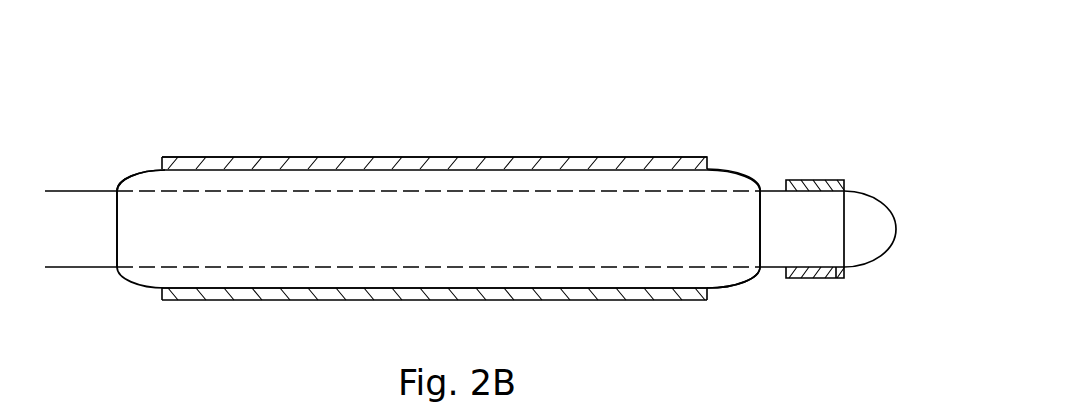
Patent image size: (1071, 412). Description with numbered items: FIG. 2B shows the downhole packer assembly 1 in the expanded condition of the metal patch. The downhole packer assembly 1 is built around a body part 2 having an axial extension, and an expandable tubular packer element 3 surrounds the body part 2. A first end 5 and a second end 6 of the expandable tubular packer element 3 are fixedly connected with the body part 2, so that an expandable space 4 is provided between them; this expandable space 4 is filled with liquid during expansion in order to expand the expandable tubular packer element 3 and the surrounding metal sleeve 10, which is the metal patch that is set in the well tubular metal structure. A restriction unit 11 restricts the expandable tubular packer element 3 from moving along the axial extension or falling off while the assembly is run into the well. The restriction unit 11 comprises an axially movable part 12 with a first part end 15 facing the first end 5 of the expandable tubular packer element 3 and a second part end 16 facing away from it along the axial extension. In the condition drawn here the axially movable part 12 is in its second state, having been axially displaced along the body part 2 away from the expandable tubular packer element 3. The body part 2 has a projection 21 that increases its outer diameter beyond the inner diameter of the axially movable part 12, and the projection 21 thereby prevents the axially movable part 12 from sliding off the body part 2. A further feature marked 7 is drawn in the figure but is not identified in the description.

The downhole packer assembly 1 is at (116, 100).
The body part 2 is at (63, 205).
The expandable tubular packer element 3 is at (522, 210).
The expandable space 4 is at (631, 178).
The first end of the expandable tubular packer element 5 is at (747, 203).
The second end of the expandable tubular packer element 6 is at (126, 200).
The transition section 7 is at (150, 168).
The metal sleeve 10 is at (420, 160).
The restriction unit 11 is at (836, 190).
The axially movable part 12 is at (806, 185).
The first part end 15 is at (787, 279).
The second part end 16 is at (836, 279).
The projection 21 is at (865, 268).